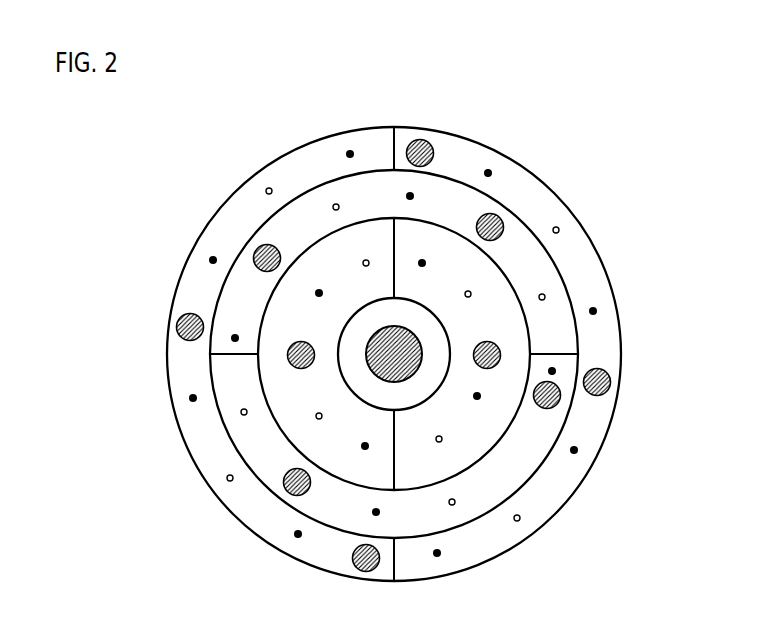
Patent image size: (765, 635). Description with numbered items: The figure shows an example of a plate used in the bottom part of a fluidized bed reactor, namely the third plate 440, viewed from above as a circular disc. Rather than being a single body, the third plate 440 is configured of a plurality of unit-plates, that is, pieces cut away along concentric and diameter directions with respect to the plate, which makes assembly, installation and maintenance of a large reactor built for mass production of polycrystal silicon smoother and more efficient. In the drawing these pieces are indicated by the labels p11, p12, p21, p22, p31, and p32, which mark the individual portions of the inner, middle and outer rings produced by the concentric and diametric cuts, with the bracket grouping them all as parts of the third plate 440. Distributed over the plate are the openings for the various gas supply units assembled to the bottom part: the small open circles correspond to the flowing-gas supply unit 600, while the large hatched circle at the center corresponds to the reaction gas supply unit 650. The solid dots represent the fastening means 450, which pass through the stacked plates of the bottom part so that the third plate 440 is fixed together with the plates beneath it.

The third plate 440 is at (113, 162).
The fastening means 450 is at (593, 310).
The flowing-gas supply unit 600 is at (558, 228).
The reaction gas supply unit 650 is at (405, 332).
The first position of inner region p11 is at (175, 397).
The second position of inner region p12 is at (407, 562).
The first position of middle region p21 is at (237, 278).
The second position of middle region p22 is at (215, 370).
The first position of outer region p31 is at (323, 252).
The second position of outer region p32 is at (394, 233).